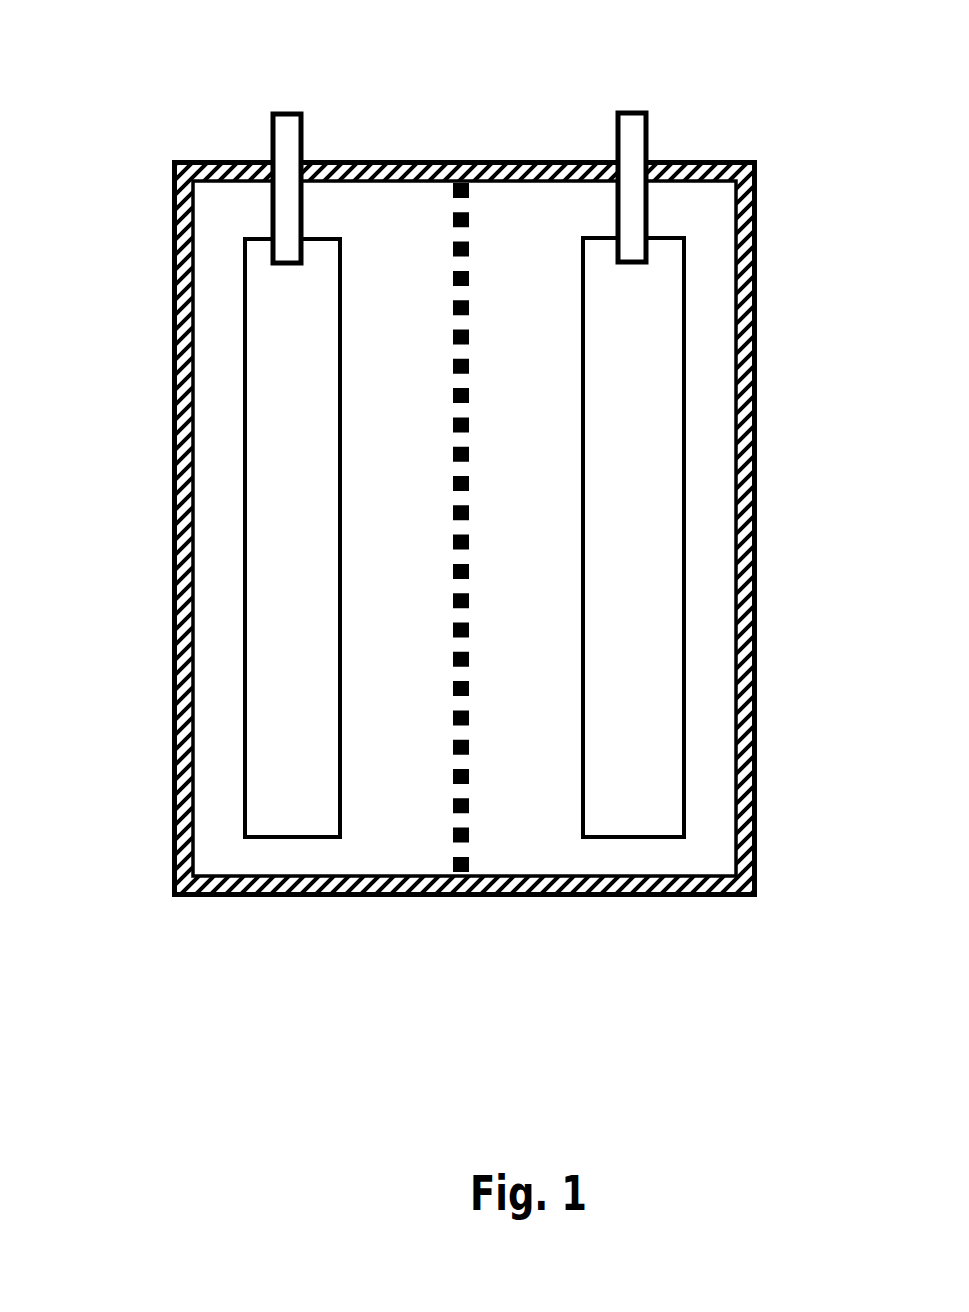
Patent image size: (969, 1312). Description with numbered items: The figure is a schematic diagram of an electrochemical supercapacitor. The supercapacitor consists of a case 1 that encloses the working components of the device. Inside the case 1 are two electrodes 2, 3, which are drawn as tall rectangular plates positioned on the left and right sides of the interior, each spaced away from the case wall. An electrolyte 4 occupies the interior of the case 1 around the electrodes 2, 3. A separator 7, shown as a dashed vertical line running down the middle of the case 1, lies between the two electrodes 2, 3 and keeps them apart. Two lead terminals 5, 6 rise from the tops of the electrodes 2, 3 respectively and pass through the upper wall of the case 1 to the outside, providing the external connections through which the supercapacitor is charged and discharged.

The case 1 is at (172, 520).
The electrode 2 is at (277, 410).
The electrode 3 is at (663, 420).
The electrolyte 4 is at (522, 822).
The lead terminal 5 is at (273, 127).
The lead terminal 6 is at (643, 137).
The separator 7 is at (460, 730).